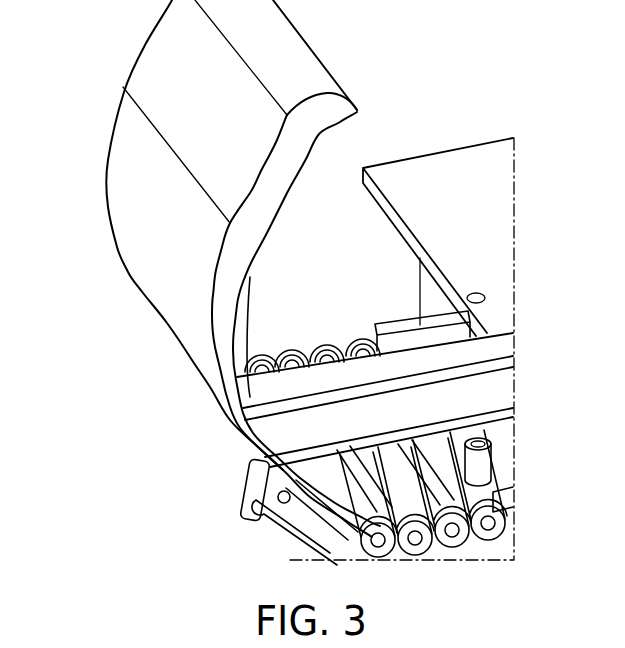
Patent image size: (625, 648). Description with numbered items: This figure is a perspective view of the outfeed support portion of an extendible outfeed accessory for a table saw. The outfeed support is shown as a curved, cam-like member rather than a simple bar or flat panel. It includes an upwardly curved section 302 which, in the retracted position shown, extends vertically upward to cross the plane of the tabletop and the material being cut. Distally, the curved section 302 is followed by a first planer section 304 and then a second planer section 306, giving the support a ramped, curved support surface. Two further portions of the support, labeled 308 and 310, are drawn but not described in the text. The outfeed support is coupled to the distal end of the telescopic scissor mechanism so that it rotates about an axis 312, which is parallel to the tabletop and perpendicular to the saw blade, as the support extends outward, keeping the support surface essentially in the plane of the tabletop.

The upwardly curved section 302 is at (231, 395).
The first planer section 304 is at (282, 210).
The second planer section 306 is at (343, 128).
The bent portion of flexible panel 308 is at (143, 202).
The flexible display panel 310 is at (193, 92).
The axis 312 is at (380, 548).